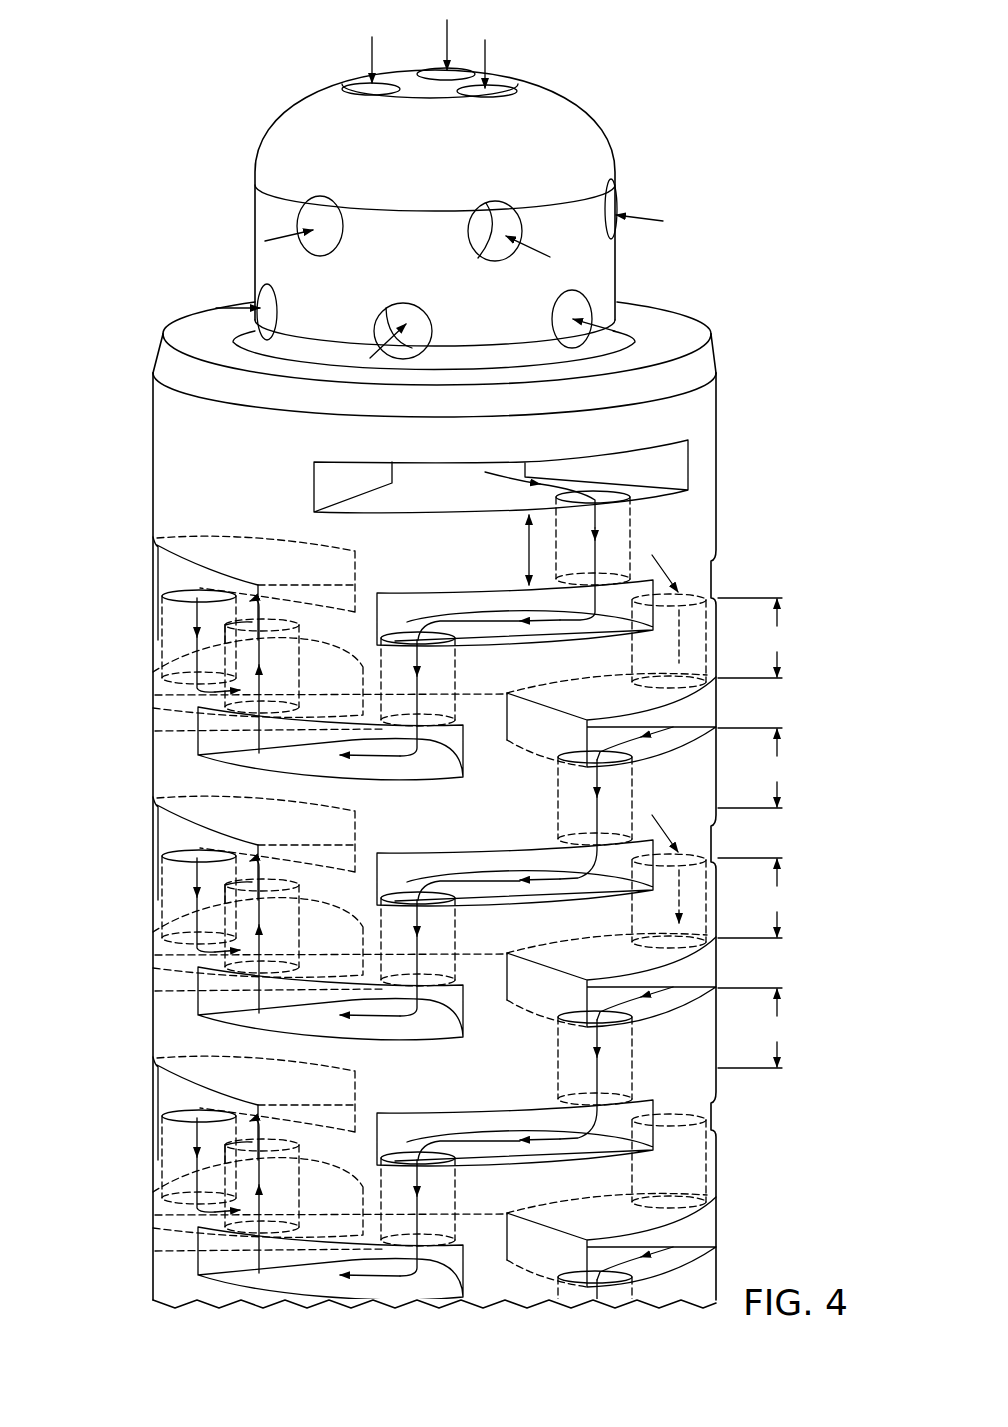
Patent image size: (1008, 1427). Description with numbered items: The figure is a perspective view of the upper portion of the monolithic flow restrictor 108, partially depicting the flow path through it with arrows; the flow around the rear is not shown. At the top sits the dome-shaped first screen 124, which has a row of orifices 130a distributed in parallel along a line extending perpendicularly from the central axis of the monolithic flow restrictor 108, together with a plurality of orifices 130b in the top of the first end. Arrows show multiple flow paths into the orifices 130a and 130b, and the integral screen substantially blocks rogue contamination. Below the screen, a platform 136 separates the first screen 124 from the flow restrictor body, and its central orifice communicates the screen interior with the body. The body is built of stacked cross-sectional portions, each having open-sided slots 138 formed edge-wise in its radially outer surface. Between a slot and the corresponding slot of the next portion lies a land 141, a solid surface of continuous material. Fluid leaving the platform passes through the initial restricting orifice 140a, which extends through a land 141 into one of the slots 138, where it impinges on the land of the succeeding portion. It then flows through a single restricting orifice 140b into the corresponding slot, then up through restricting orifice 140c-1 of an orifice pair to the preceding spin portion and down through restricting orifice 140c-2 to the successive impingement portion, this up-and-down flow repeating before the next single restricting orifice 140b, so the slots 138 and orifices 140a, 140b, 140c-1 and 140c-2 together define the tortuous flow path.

The monolithic flow restrictor 108 is at (815, 768).
The first screen 124 is at (603, 126).
The orifices 130a is at (298, 222).
The orifices 130b is at (352, 90).
The platform 136 is at (712, 352).
The open-sided slots 138 is at (445, 497).
The initial restricting orifice 140a is at (597, 497).
The single restricting orifice 140b is at (408, 635).
The restricting orifice 140c-1 is at (247, 630).
The restricting orifice 140c-2 is at (190, 592).
The land 141 is at (527, 548).